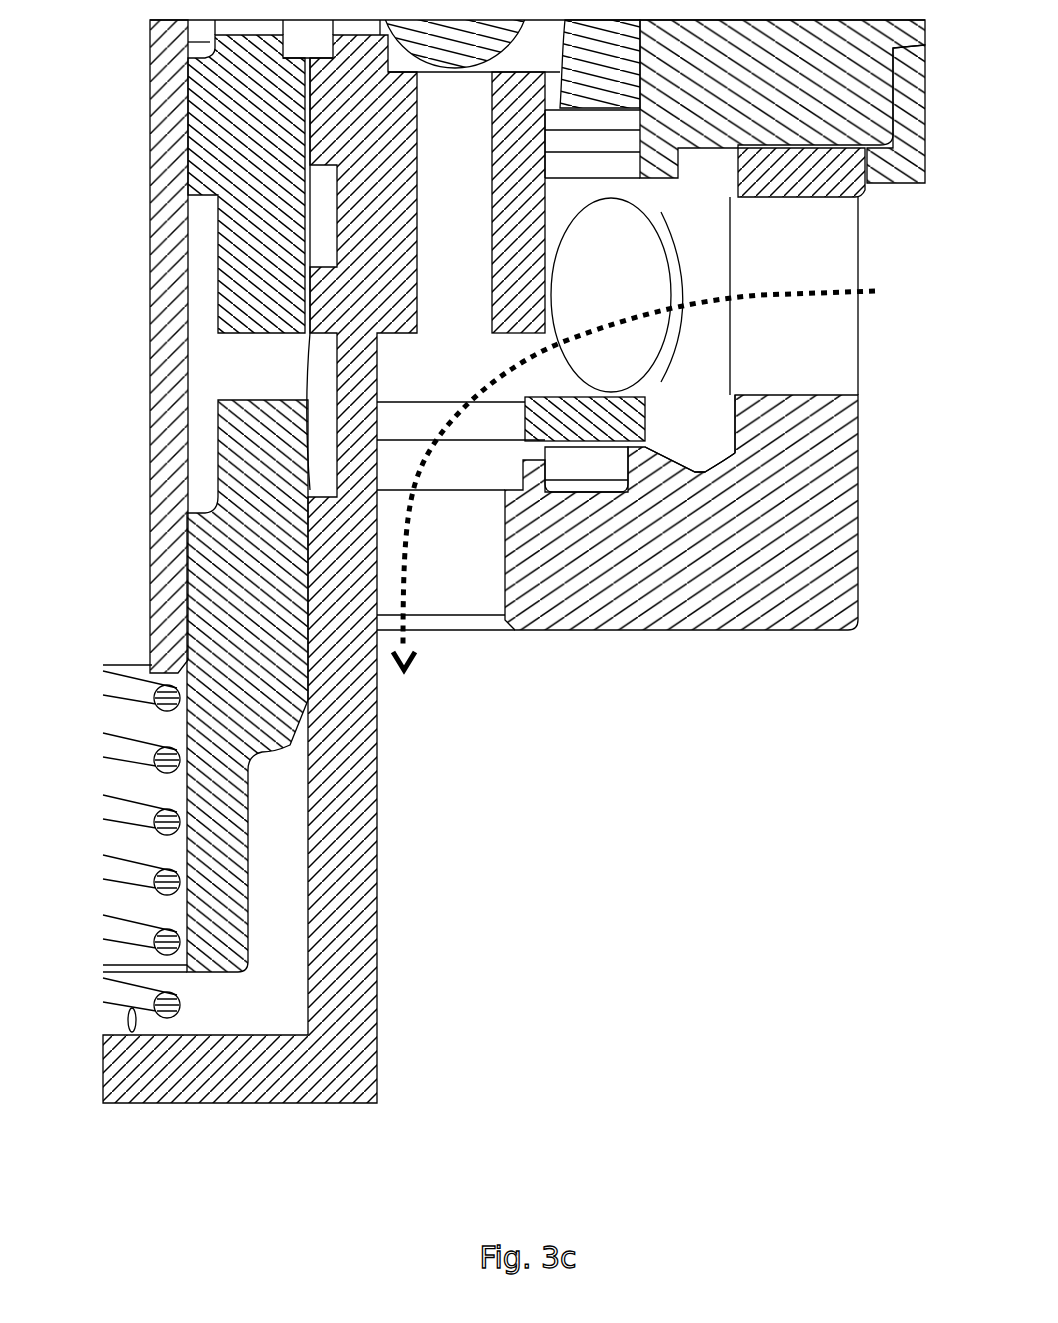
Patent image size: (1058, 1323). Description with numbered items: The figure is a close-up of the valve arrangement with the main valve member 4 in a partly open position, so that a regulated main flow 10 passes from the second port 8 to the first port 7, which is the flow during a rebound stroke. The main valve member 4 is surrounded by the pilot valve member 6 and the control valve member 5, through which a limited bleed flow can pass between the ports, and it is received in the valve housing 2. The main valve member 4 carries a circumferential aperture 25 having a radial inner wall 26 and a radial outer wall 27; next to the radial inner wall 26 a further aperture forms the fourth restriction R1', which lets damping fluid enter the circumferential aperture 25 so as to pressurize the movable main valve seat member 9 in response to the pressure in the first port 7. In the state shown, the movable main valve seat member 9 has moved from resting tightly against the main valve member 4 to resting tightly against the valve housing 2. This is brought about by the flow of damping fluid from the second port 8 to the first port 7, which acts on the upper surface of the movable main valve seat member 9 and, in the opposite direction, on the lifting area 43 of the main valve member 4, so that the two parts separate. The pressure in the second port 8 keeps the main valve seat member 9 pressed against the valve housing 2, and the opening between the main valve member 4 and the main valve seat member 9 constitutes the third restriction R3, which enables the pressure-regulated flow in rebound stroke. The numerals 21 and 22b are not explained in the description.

The valve housing 2 is at (762, 612).
The main valve member 4 is at (352, 280).
The control valve member 5 is at (207, 595).
The pilot valve member 6 is at (150, 432).
The first port 7 is at (416, 726).
The second port 8 is at (818, 268).
The movable main valve seat member 9 is at (636, 408).
The regulated main flow 10 is at (763, 295).
The valve seat insert 21 is at (526, 442).
The sealing surface 22b is at (588, 395).
The circumferential aperture 25 is at (590, 460).
The radial inner wall 26 is at (548, 448).
The radial outer wall 27 is at (623, 459).
The lifting area 43 is at (565, 105).
The fourth restriction R1' is at (799, 415).
The third restriction R3 is at (528, 380).